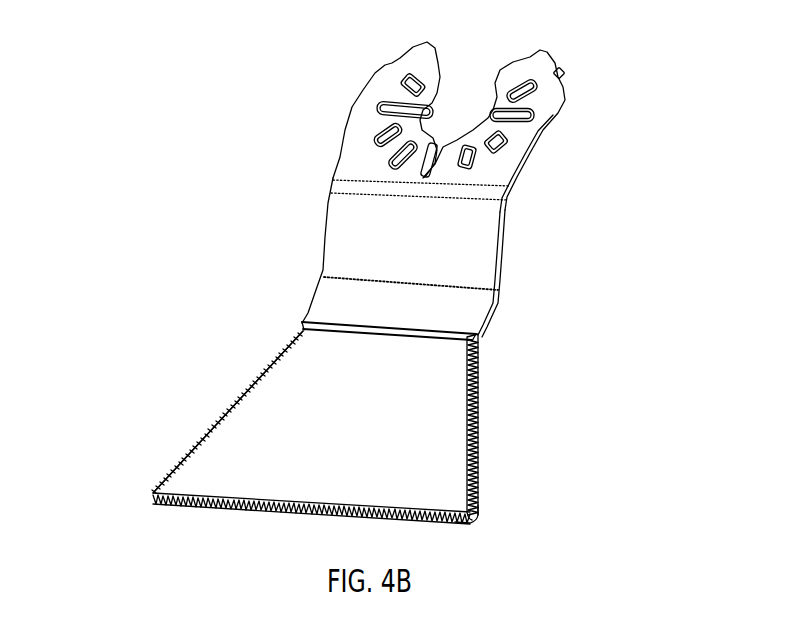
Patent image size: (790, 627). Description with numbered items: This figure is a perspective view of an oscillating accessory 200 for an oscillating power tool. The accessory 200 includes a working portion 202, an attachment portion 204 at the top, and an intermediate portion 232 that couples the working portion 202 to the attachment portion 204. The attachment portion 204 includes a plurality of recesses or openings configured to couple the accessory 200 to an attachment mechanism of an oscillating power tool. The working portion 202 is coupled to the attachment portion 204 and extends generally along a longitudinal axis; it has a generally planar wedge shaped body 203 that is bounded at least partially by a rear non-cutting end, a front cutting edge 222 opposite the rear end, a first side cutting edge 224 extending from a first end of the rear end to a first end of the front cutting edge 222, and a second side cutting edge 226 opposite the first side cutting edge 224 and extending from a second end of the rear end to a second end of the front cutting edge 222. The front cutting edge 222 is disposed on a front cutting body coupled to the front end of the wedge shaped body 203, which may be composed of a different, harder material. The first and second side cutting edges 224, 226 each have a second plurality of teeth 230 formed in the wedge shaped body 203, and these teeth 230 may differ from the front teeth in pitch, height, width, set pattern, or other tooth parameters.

The oscillating accessory 200 is at (263, 256).
The attachment portion 204 is at (545, 113).
The intermediate portion 232 is at (488, 237).
The working portion 202 is at (458, 387).
The wedge shaped body 203 is at (433, 430).
The second plurality of teeth 230 is at (478, 368).
The first side cutting edge 224 is at (477, 477).
The front cutting edge 222 is at (200, 513).
The second side cutting edge 226 is at (197, 437).